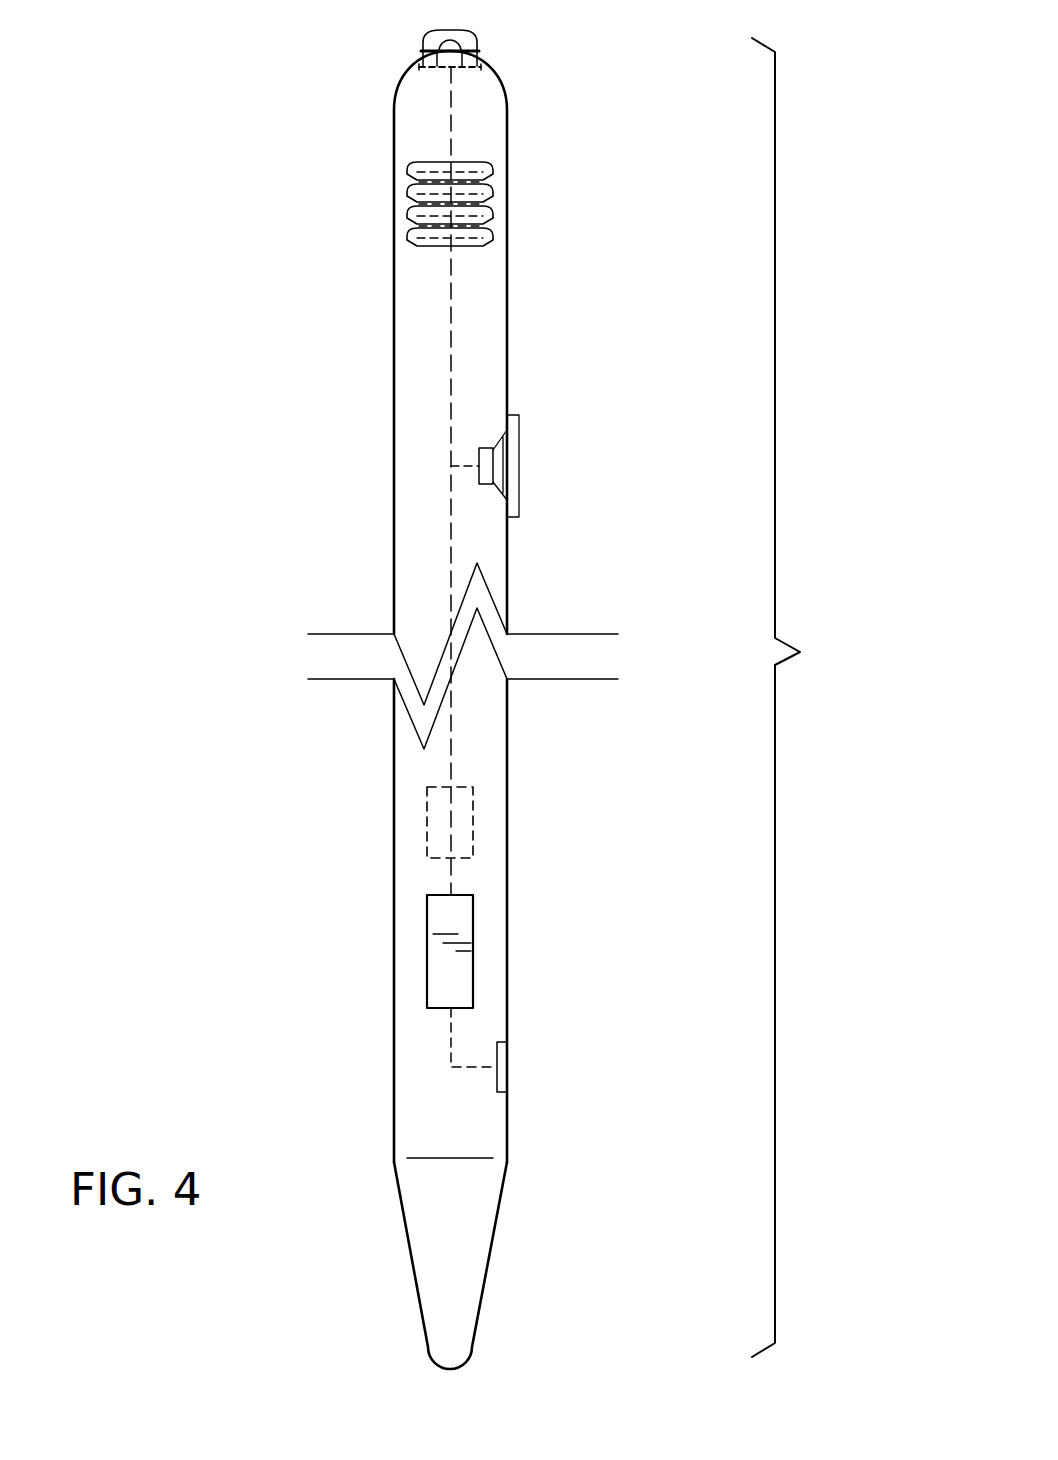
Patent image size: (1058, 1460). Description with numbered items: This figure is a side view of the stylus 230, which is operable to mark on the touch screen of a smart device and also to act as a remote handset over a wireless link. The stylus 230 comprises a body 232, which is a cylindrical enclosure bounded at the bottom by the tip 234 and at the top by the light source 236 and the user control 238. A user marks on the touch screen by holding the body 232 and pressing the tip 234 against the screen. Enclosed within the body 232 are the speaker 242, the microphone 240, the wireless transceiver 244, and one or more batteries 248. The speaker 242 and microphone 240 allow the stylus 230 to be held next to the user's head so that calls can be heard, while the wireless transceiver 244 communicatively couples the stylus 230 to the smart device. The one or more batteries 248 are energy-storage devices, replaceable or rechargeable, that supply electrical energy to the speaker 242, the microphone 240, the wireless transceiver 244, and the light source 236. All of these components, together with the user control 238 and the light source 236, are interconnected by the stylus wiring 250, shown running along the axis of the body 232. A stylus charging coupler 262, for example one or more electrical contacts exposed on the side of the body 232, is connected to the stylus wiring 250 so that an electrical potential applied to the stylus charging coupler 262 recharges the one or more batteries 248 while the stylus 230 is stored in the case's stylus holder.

The stylus 230 is at (580, 689).
The body 232 is at (394, 362).
The tip 234 is at (422, 1233).
The light source 236 is at (462, 42).
The user control 238 is at (430, 42).
The microphone 240 is at (508, 1075).
The speaker 242 is at (519, 470).
The wireless transceiver 244 is at (473, 825).
The one or more batteries 248 is at (493, 210).
The stylus wiring 250 is at (451, 504).
The stylus charging coupler 262 is at (473, 935).